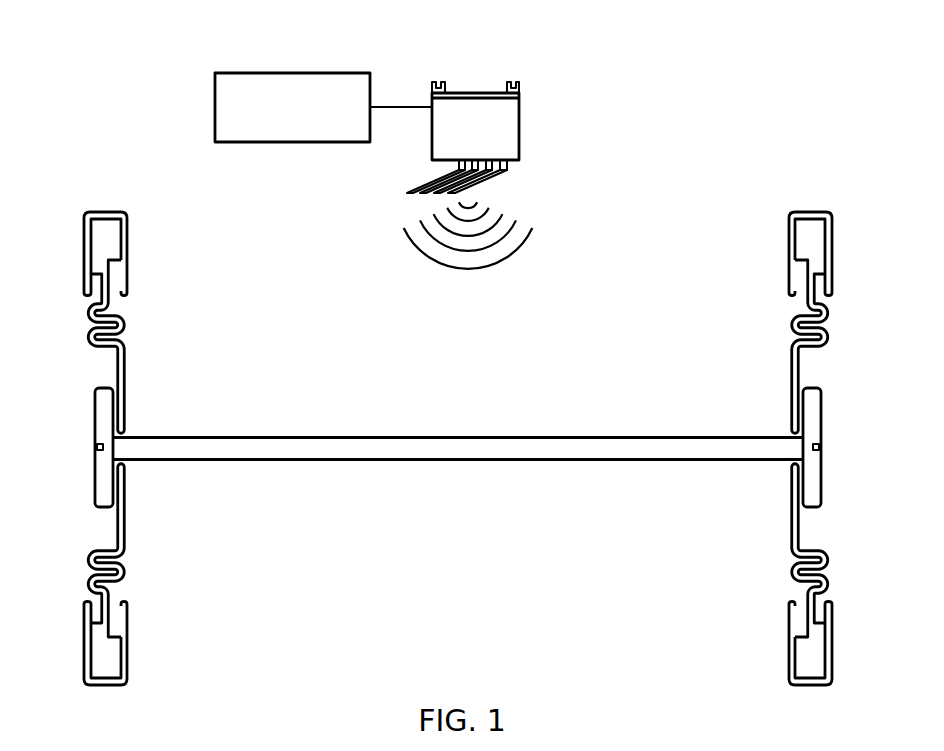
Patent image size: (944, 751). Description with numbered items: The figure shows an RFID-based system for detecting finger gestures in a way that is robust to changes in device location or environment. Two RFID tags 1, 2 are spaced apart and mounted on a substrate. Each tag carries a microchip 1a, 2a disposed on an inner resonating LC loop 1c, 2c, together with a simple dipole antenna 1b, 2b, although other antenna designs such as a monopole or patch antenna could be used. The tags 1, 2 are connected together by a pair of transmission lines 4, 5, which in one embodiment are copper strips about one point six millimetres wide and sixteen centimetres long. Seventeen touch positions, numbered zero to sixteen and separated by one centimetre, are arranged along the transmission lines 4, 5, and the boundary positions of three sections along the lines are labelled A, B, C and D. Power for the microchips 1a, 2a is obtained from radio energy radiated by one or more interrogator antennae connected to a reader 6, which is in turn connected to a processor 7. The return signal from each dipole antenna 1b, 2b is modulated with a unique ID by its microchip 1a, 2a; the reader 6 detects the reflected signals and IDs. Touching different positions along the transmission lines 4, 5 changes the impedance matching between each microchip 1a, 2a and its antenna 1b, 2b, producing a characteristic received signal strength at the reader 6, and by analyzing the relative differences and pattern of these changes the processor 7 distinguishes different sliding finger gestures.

The RFID tag 1 is at (136, 448).
The microchip 1a is at (97, 447).
The dipole antenna 1b is at (82, 320).
The inner resonating LC loop 1c is at (104, 385).
The RFID tag 2 is at (770, 448).
The microchip 2a is at (823, 447).
The dipole antenna 2b is at (787, 320).
The inner resonating LC loop 2c is at (823, 388).
The transmission line 4 is at (235, 435).
The transmission line 5 is at (347, 458).
The reader 6 is at (522, 125).
The processor 7 is at (372, 88).